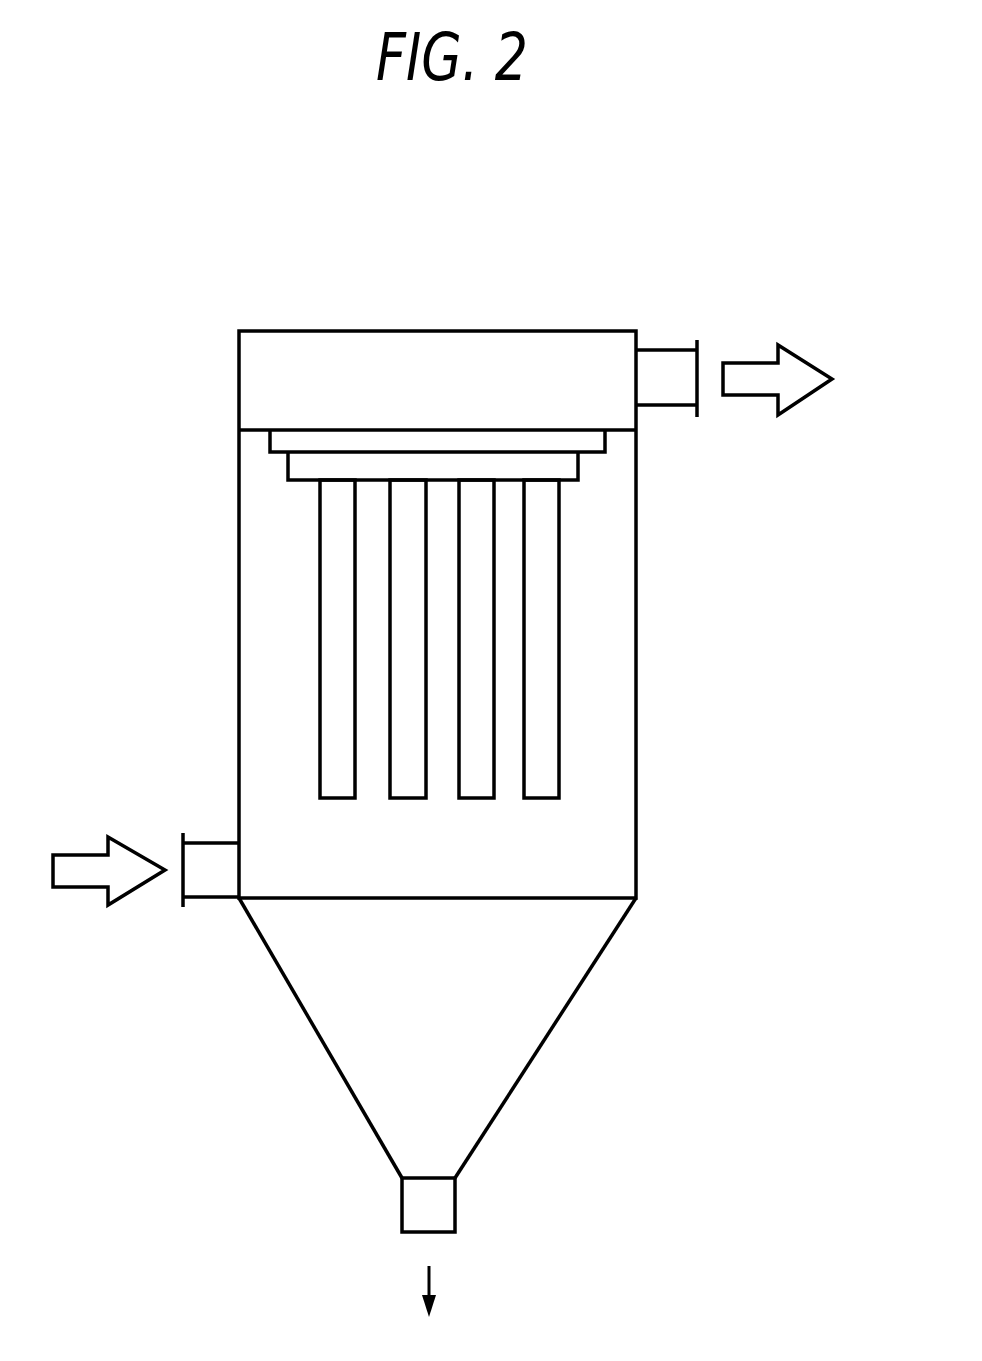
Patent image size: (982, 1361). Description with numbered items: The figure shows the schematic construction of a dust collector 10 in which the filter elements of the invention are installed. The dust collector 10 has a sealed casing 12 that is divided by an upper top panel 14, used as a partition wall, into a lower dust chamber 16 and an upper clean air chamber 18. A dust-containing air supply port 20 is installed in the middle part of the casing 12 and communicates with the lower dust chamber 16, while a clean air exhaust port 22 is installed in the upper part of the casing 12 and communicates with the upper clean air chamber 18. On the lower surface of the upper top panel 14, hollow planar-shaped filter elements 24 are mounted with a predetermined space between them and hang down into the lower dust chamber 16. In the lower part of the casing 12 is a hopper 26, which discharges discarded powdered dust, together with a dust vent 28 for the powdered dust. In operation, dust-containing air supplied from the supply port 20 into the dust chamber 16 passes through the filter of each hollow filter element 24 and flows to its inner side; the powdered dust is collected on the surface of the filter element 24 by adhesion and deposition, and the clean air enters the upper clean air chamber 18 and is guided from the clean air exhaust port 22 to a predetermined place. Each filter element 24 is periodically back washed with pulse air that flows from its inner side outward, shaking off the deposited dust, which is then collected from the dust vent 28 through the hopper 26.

The dust collector 10 is at (604, 262).
The sealed casing 12 is at (636, 673).
The upper top panel 14 is at (257, 430).
The lower dust chamber 16 is at (608, 858).
The upper clean air chamber 18 is at (300, 347).
The dust-containing air supply port 20 is at (208, 858).
The clean air exhaust port 22 is at (663, 388).
The filter element 24 is at (568, 806).
The hopper 26 is at (540, 1008).
The dust vent 28 is at (443, 1199).